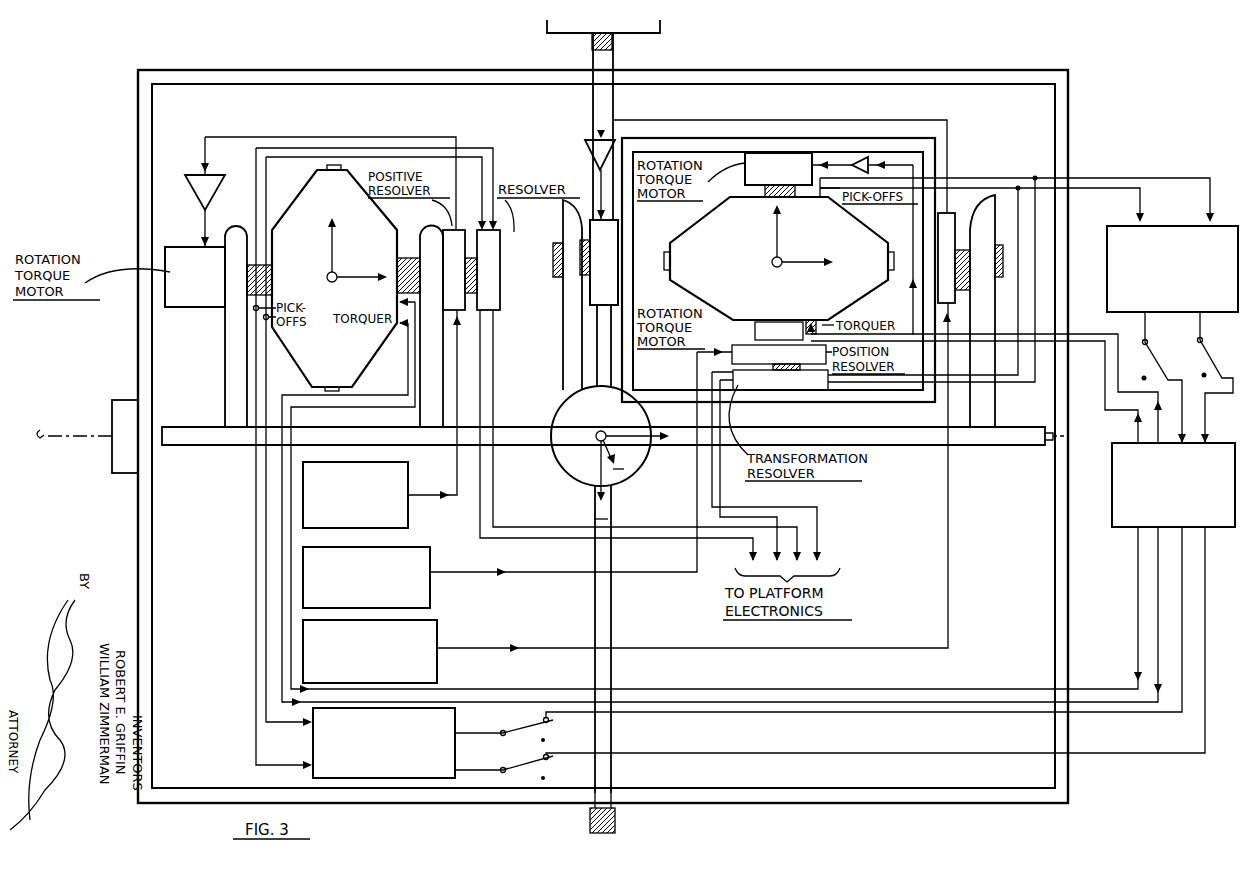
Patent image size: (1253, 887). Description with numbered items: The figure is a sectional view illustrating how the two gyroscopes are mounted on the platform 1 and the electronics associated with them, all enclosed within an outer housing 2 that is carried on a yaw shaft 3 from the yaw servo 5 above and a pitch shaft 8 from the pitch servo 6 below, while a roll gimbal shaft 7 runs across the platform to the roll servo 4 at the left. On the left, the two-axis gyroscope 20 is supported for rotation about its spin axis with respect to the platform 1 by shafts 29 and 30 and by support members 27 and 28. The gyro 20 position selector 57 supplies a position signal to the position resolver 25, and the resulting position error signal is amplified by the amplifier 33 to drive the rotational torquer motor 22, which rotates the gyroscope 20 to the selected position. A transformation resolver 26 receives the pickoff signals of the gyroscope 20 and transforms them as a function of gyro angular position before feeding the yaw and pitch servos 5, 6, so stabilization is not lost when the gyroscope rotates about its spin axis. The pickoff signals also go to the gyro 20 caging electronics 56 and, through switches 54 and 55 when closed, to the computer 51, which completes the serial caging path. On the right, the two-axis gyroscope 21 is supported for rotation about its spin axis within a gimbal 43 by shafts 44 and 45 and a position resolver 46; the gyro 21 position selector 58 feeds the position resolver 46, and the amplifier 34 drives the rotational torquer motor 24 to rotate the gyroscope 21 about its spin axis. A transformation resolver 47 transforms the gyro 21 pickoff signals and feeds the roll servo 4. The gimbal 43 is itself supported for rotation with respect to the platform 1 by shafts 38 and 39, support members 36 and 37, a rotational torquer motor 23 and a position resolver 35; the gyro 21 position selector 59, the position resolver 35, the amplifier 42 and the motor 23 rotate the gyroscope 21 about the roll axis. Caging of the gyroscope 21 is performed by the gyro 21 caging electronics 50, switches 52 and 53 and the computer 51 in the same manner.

The platform 1 is at (925, 432).
The housing 2 is at (1062, 601).
The yaw shaft 3 is at (604, 111).
The roll servo 4 is at (120, 456).
The yaw servo 5 is at (792, 50).
The pitch servo 6 is at (590, 465).
The roll gimbal shaft 7 is at (1044, 447).
The pitch shaft 8 is at (617, 806).
The two-axis gyroscope 20 is at (352, 375).
The two-axis gyroscope 21 is at (792, 311).
The rotational torquer motor 22 is at (195, 277).
The rotational torquer motor 23 is at (614, 242).
The rotational torquer motor 24 is at (792, 181).
The position resolver 25 is at (335, 318).
The transformation resolver 26 is at (378, 229).
The support member 27 is at (236, 326).
The support member 28 is at (431, 327).
The shaft 29 is at (409, 262).
The shaft 30 is at (262, 292).
The amplifier 33 is at (212, 186).
The amplifier 34 is at (858, 157).
The position resolver 35 is at (784, 221).
The support member 36 is at (574, 338).
The support member 37 is at (995, 241).
The shaft 38 is at (588, 258).
The shaft 39 is at (963, 250).
The amplifier 42 is at (588, 143).
The gimbal 43 is at (930, 156).
The shaft 44 is at (770, 198).
The shaft 45 is at (779, 331).
The position resolver 46 is at (779, 354).
The transformation resolver 47 is at (780, 377).
The gyro 21 caging electronics 50 is at (1128, 230).
The computer 51 is at (1118, 502).
The switch 52 is at (1212, 365).
The switch 53 is at (1148, 362).
The switch 54 is at (538, 717).
The switch 55 is at (538, 753).
The gyro 20 caging electronics 56 is at (313, 742).
The gyro 20 position selector 57 is at (412, 500).
The gyro 21 position selector 58 is at (430, 557).
The gyro 21 position selector 59 is at (437, 655).